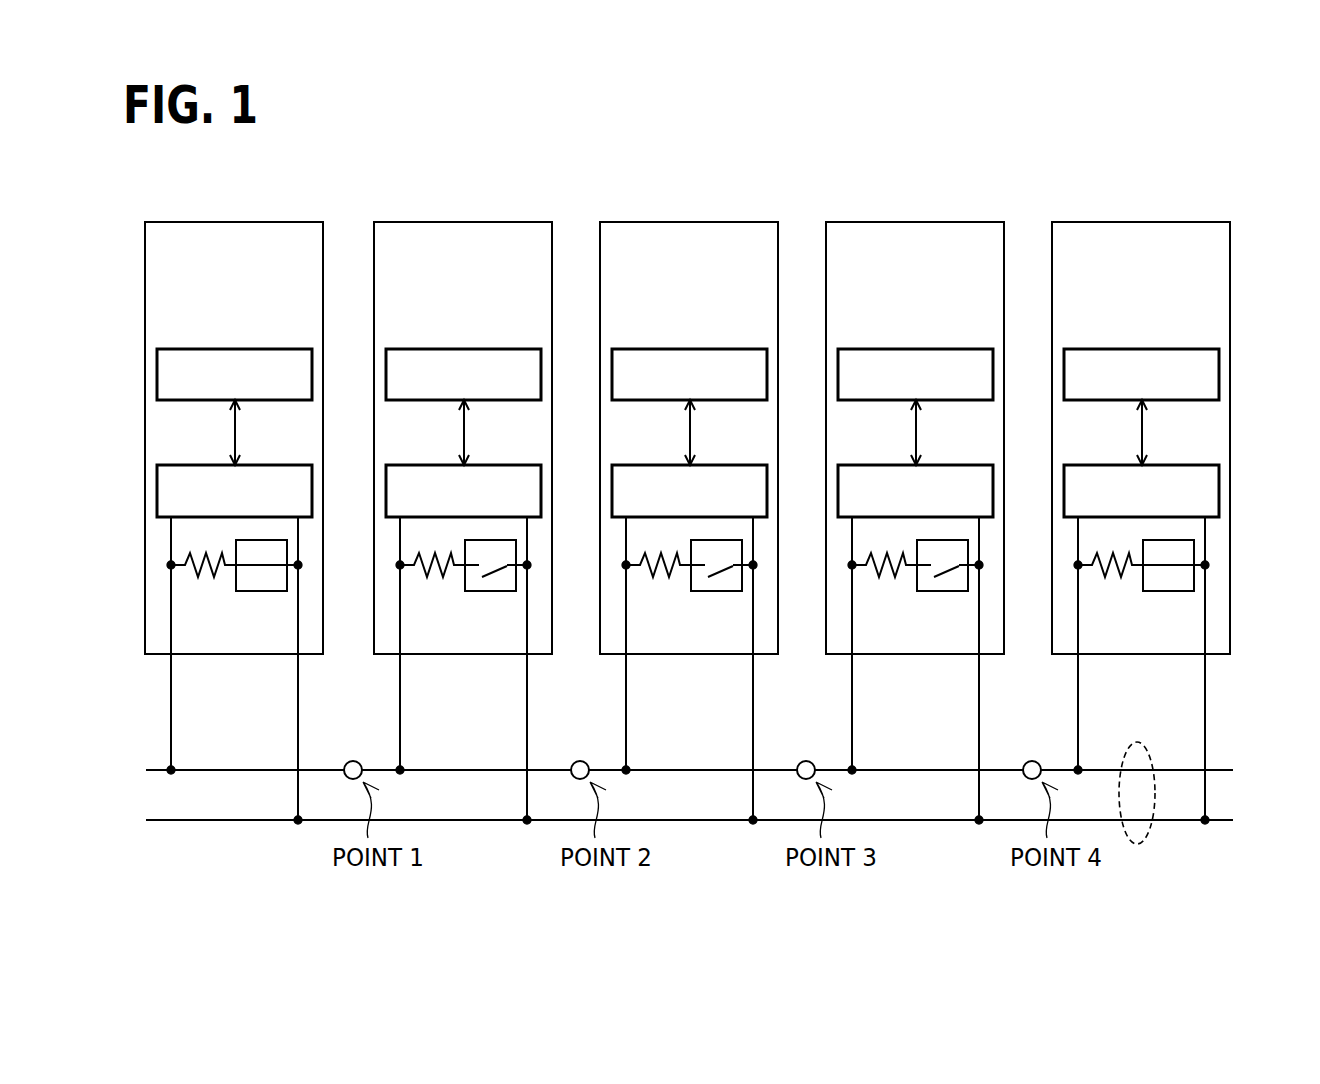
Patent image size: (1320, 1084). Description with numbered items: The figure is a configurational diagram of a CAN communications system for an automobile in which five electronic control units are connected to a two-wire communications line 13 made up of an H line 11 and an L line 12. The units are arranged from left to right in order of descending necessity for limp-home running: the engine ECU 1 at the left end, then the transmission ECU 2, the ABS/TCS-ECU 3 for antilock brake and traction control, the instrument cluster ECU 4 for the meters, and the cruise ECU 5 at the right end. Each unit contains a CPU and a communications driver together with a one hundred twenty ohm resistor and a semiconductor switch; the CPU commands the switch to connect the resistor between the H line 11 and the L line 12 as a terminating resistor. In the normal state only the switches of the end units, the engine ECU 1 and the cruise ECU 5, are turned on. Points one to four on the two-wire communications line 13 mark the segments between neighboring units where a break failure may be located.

The engine ECU 1 is at (262, 222).
The transmission ECU 2 is at (491, 222).
The ABS/TCS-ECU 3 is at (717, 222).
The instrument cluster ECU 4 is at (943, 222).
The cruise ECU 5 is at (1169, 222).
The H line 11 is at (1184, 770).
The L line 12 is at (1183, 822).
The two-wire communications line 13 is at (1136, 844).